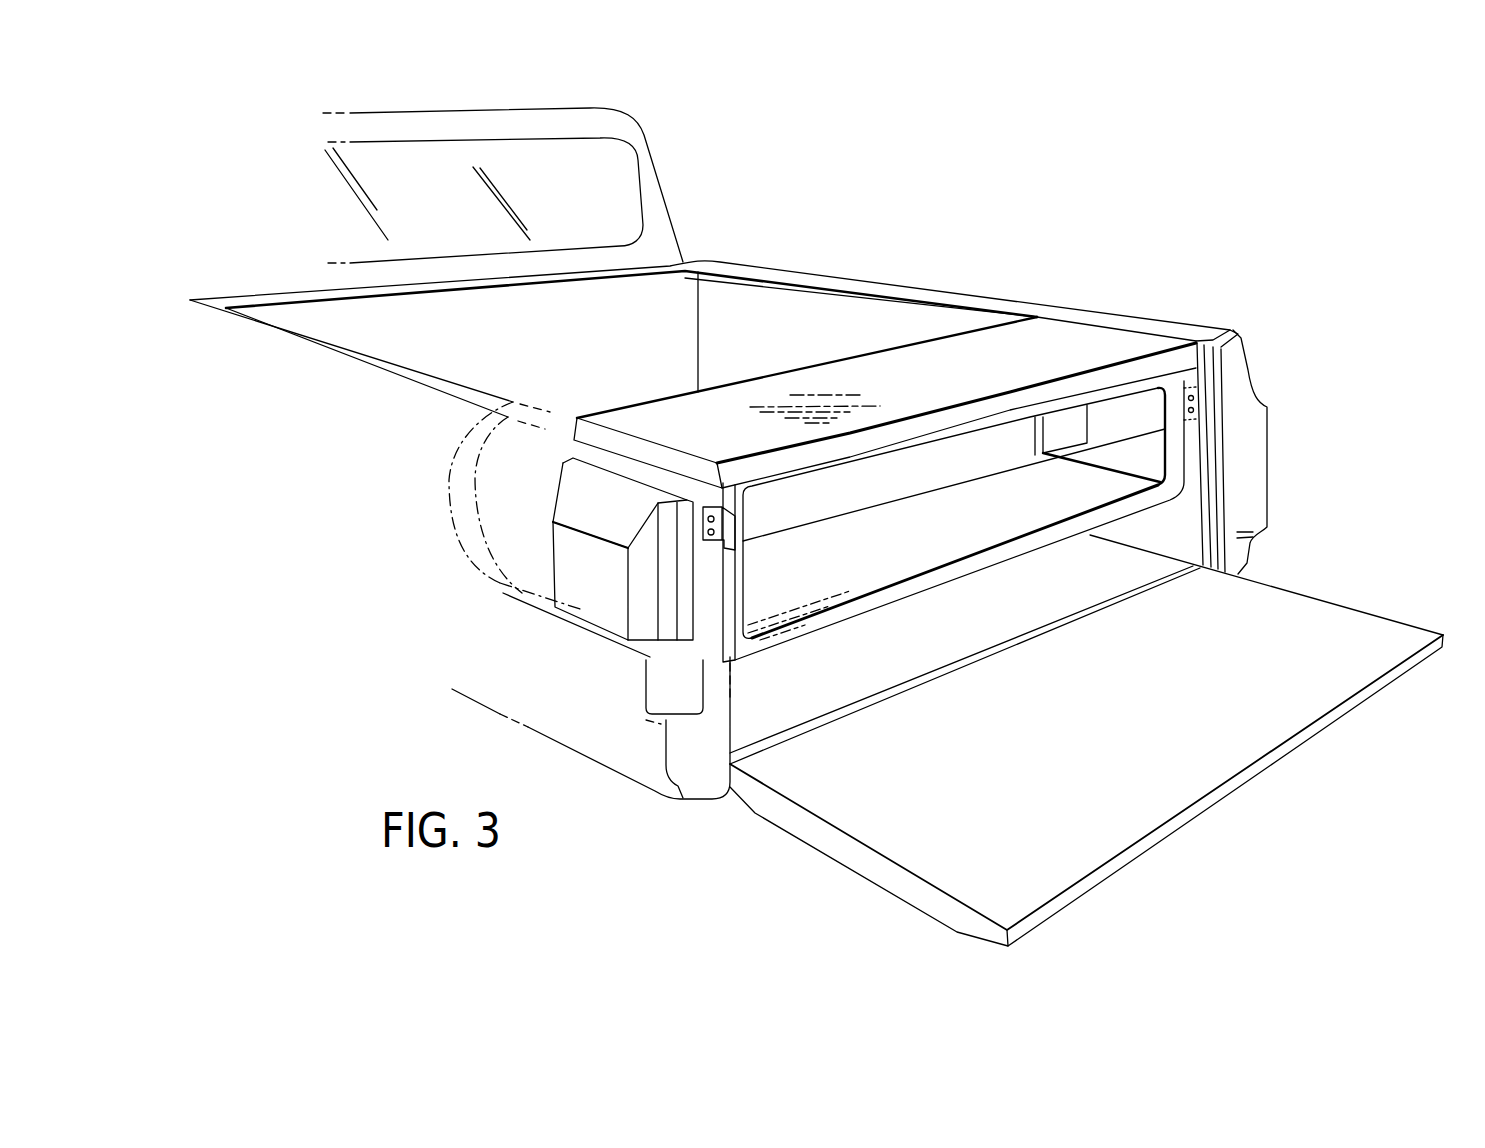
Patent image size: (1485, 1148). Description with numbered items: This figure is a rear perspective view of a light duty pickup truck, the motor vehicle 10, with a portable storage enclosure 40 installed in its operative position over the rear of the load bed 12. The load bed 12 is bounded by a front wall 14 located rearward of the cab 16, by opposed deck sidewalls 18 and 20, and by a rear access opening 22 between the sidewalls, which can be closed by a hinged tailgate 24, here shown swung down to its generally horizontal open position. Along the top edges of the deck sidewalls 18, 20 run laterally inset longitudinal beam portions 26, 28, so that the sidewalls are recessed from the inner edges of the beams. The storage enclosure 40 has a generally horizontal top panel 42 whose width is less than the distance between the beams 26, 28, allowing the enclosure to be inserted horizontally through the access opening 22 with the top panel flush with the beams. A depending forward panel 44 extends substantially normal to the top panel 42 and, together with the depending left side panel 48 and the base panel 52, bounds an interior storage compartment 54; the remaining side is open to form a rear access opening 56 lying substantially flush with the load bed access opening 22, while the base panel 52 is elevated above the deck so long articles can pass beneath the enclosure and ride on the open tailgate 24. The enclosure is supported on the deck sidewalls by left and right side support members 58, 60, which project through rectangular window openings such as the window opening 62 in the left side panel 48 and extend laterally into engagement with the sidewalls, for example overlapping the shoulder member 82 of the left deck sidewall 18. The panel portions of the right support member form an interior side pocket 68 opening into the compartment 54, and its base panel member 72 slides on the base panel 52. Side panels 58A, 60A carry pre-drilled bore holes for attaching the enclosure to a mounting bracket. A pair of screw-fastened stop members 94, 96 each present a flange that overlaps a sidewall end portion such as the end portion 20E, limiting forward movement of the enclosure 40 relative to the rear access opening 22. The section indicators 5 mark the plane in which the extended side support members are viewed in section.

The motor vehicle 10 is at (272, 140).
The load bed 12 is at (790, 267).
The front wall 14 is at (530, 347).
The cab 16 is at (668, 178).
The deck sidewall 18 is at (345, 432).
The deck sidewall 20 is at (800, 342).
The end portion 20E is at (1210, 436).
The rear access opening 22 is at (1167, 522).
The tailgate 24 is at (1198, 820).
The longitudinal beam portion 26 is at (352, 350).
The longitudinal beam portion 28 is at (920, 287).
The storage enclosure 40 is at (1033, 350).
The top panel 42 is at (934, 399).
The depending forward panel 44 is at (772, 517).
The depending left side panel 48 is at (707, 613).
The base panel 52 is at (1000, 540).
The interior storage compartment 54 is at (912, 538).
The rear access opening 56 is at (1128, 422).
The left side support member 58 is at (587, 548).
The side panel 58A is at (567, 587).
The right side support member 60 is at (1083, 474).
The side panel 60A is at (1127, 407).
The window opening 62 is at (632, 478).
The interior side pocket 68 is at (1065, 432).
The base panel member 72 is at (1130, 478).
The shoulder member 82 is at (593, 612).
The stop member 94 is at (737, 553).
The stop member 96 is at (1203, 398).
The section line 5- 5 is at (1240, 300).